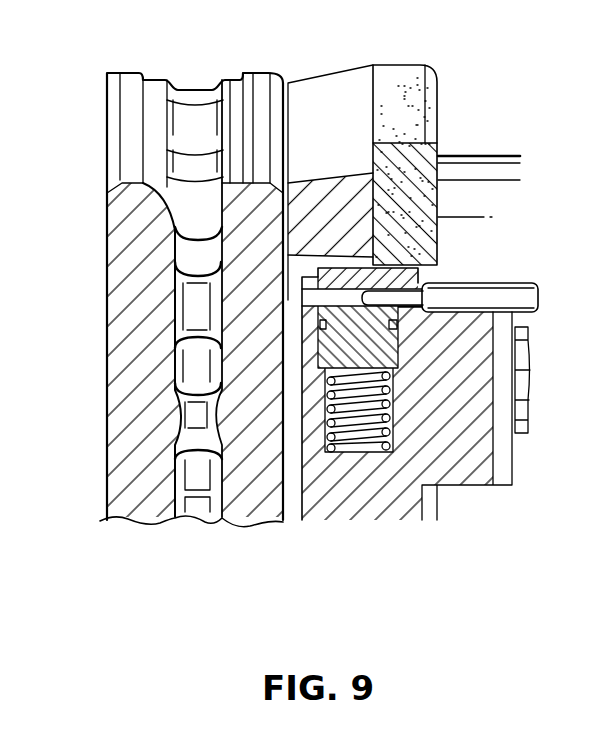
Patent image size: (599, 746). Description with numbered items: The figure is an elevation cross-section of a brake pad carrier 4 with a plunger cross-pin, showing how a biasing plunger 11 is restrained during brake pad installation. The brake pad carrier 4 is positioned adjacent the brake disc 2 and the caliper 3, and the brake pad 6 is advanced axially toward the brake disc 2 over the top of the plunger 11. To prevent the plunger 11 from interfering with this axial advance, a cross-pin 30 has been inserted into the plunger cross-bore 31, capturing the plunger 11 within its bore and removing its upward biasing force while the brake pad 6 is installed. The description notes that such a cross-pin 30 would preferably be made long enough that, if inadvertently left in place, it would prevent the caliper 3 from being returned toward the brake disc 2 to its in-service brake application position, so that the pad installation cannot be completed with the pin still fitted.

The brake disc 2 is at (114, 218).
The caliper 3 is at (477, 187).
The brake pad carrier 4 is at (382, 493).
The brake pad 6 is at (409, 70).
The biasing plunger 11 is at (392, 337).
The cross-pin 30 is at (493, 296).
The plunger cross-bore 31 is at (340, 293).